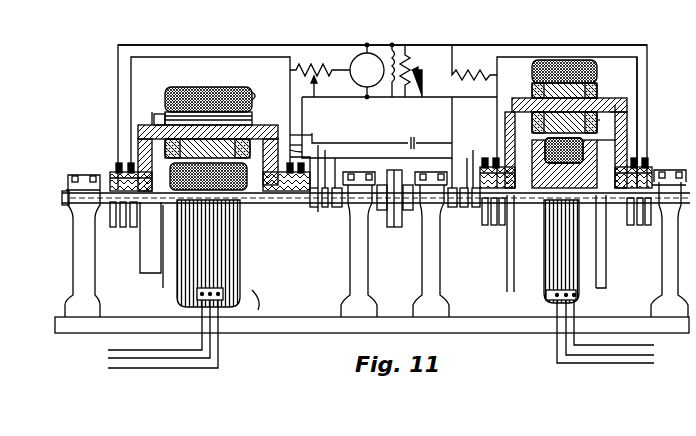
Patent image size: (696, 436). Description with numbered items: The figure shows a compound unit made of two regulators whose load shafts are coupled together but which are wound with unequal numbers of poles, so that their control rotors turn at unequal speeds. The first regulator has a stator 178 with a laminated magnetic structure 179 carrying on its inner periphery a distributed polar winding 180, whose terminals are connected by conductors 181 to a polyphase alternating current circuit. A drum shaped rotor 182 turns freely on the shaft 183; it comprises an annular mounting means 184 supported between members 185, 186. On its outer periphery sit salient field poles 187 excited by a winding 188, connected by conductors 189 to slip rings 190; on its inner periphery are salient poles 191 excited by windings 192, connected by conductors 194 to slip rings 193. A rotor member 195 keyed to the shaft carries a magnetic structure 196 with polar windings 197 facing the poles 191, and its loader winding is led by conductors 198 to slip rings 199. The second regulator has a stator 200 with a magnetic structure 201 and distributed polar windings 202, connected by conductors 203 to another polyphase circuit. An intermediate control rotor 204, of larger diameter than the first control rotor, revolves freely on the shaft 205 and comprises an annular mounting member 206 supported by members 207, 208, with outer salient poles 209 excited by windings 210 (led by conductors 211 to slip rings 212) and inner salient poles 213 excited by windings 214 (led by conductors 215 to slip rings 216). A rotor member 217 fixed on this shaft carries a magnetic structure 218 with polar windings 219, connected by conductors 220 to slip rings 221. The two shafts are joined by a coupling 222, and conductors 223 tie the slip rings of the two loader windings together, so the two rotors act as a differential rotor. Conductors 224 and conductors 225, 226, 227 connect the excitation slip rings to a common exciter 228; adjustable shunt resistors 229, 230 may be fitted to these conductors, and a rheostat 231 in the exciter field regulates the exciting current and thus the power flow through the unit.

The stator 178 is at (250, 92).
The laminated magnetic structure 179 is at (232, 88).
The distributed polar winding 180 is at (253, 96).
The conductors 181 is at (218, 352).
The drum shaped rotor 182 is at (262, 276).
The shaft 183 is at (66, 192).
The annular mounting means 184 is at (254, 130).
The member 185 is at (154, 120).
The member 186 is at (302, 152).
The salient field poles 187 is at (157, 113).
The winding 188 is at (126, 90).
The conductors 189 is at (160, 115).
The slip rings 190 is at (124, 228).
The salient poles 191 is at (138, 145).
The windings 192 is at (292, 133).
The slip rings 193 is at (312, 212).
The conductors 194 is at (295, 145).
The rotor member 195 is at (176, 200).
The magnetic structure 196 is at (128, 173).
The polar windings 197 is at (120, 166).
The conductors 198 is at (277, 182).
The slip rings 199 is at (320, 208).
The stator 200 is at (590, 61).
The magnetic structure 201 is at (566, 60).
The distributed polar windings 202 is at (598, 86).
The conductors 203 is at (560, 353).
The intermediate control rotor 204 is at (636, 282).
The shaft 205 is at (667, 171).
The annular mounting member 206 is at (512, 99).
The member 207 is at (507, 284).
The member 208 is at (612, 162).
The salient poles 209 is at (637, 58).
The windings 210 is at (627, 100).
The conductors 211 is at (522, 124).
The slip rings 212 is at (490, 226).
The salient poles 213 is at (617, 106).
The windings 214 is at (612, 113).
The conductors 215 is at (600, 126).
The slip rings 216 is at (636, 226).
The rotor member 217 is at (648, 172).
The magnetic structure 218 is at (598, 150).
The polar windings 219 is at (622, 141).
The conductors 220 is at (528, 158).
The slip rings 221 is at (477, 208).
The coupling 222 is at (400, 227).
The conductors 223 is at (382, 136).
The conductors 224 is at (399, 127).
The conductors 225 is at (208, 83).
The conductors 226 is at (530, 57).
The conductors 227 is at (484, 45).
The exciter 228 is at (360, 77).
The adjustable shunt resistor 229 is at (320, 73).
The adjustable shunt resistor 230 is at (470, 72).
The rheostat 231 is at (412, 64).